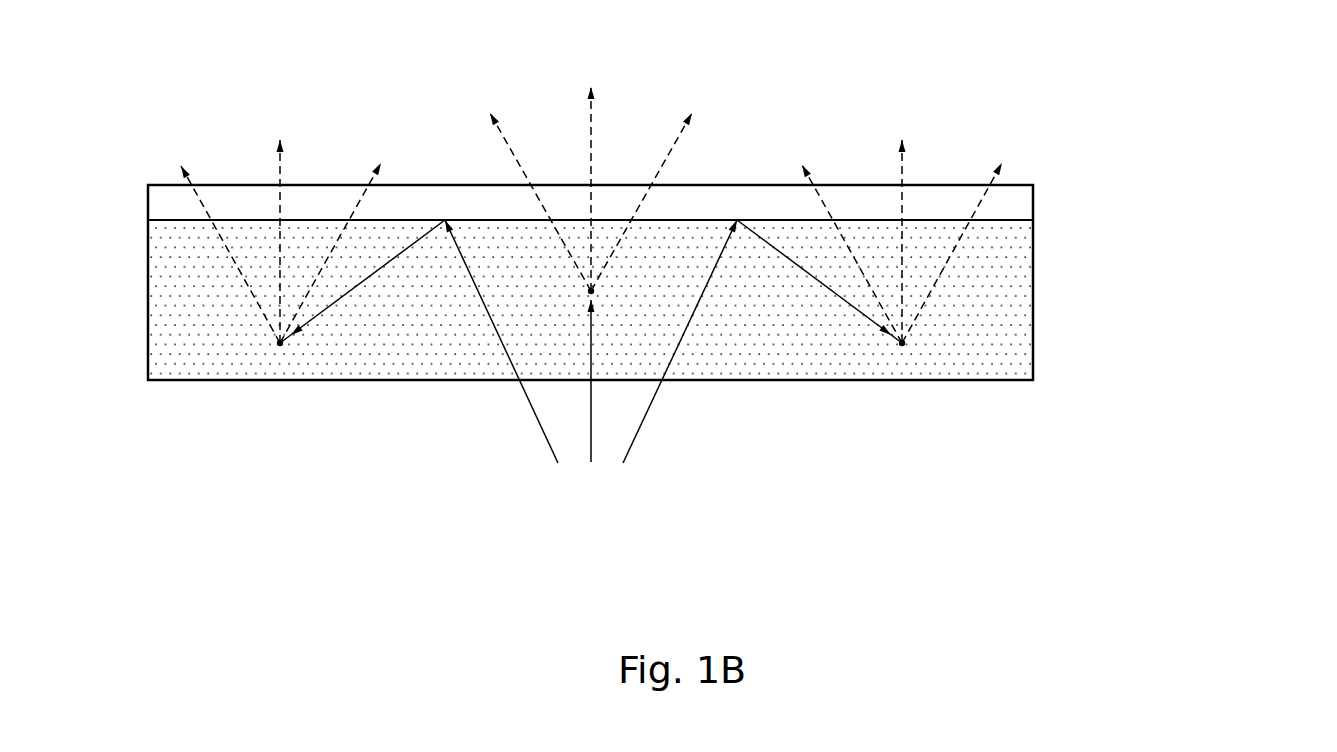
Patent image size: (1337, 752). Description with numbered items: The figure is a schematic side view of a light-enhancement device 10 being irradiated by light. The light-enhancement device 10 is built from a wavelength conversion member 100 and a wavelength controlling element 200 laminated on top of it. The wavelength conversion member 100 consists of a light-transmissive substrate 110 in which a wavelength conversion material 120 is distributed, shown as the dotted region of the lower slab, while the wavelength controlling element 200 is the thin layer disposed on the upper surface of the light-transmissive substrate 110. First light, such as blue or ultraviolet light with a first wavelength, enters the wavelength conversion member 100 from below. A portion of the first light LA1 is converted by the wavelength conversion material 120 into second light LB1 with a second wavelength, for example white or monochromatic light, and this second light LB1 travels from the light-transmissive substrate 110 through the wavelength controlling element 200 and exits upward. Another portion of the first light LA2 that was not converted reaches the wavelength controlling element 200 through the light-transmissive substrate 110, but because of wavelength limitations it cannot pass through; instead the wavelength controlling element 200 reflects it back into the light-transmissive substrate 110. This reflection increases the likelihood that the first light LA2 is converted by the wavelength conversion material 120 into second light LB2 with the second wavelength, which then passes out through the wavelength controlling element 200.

The light-enhancement device 10 is at (723, 281).
The wavelength conversion member 100 is at (693, 300).
The light-transmissive substrate 110 is at (1033, 262).
The wavelength conversion material 120 is at (1015, 298).
The wavelength controlling element 200 is at (1033, 198).
The portion of the first light LA1 is at (590, 413).
The another portion of the first light LA2 is at (535, 412).
The second light LB1 is at (590, 128).
The second light LB2 is at (278, 177).